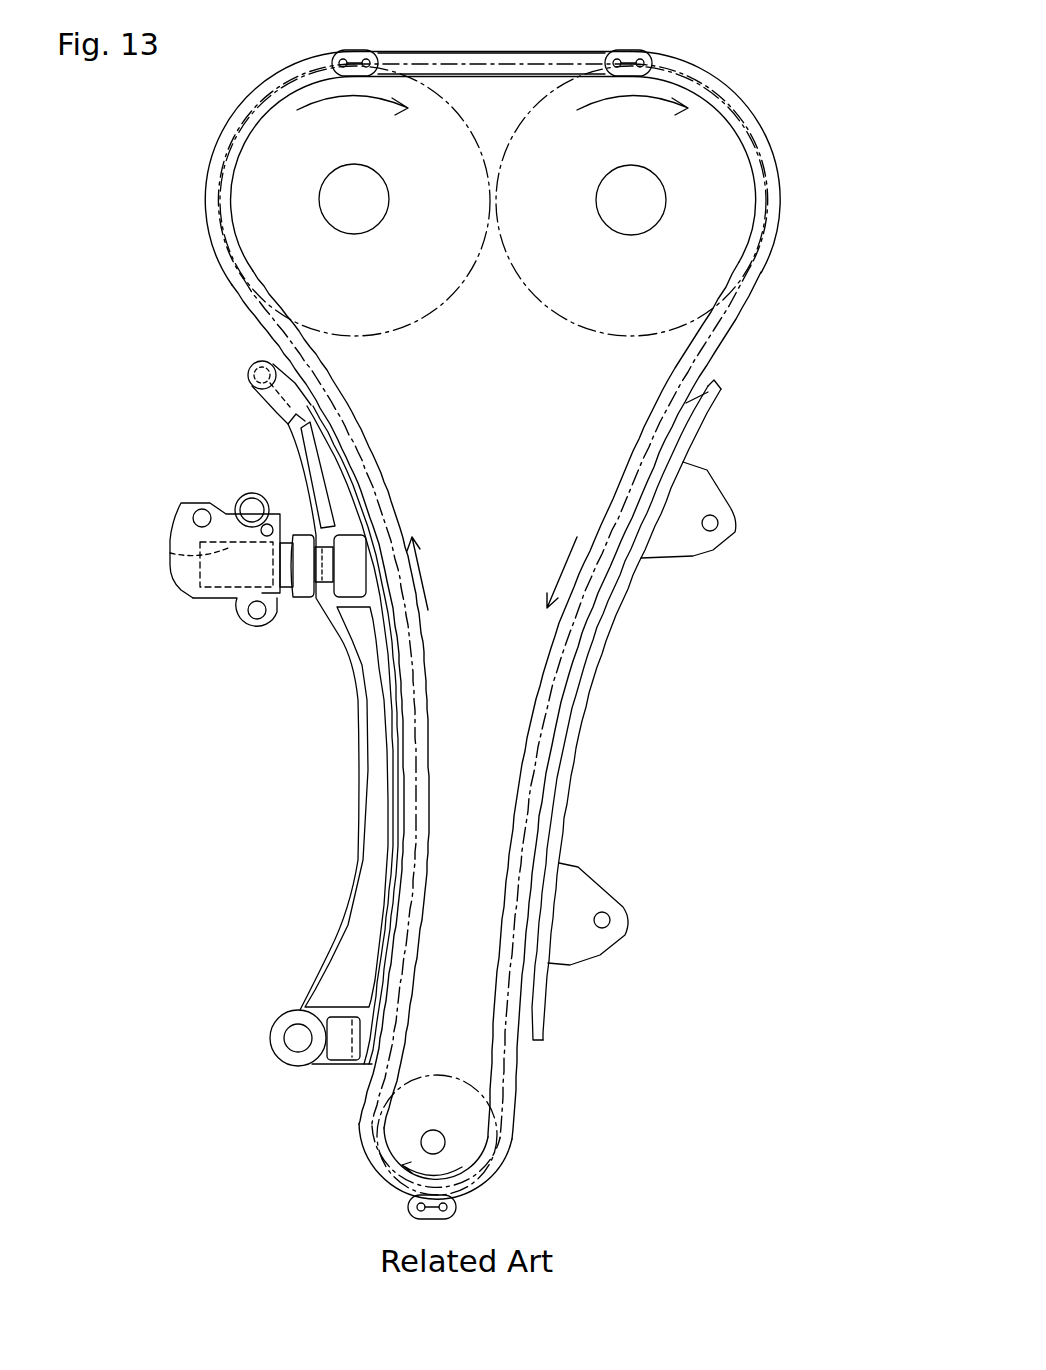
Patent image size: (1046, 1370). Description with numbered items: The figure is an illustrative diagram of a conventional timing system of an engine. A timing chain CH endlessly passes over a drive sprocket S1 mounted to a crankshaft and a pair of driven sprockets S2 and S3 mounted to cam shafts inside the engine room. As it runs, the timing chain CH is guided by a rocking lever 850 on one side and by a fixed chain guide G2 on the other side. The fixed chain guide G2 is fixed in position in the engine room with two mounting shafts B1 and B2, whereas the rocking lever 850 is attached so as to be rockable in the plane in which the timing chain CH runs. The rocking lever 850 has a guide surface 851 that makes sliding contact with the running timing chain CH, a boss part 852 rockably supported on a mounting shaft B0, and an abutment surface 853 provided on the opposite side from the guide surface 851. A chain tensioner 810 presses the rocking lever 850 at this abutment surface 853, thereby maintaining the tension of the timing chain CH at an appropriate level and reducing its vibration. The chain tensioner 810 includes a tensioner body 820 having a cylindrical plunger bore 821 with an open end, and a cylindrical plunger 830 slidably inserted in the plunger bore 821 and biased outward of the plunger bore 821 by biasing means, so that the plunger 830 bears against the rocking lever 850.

The timing chain CH is at (708, 342).
The drive sprocket S1 is at (470, 1148).
The driven sprocket S2 is at (262, 189).
The driven sprocket S3 is at (705, 178).
The fixed chain guide G2 is at (570, 766).
The mounting shaft B0 is at (288, 1040).
The mounting shaft B1 is at (718, 523).
The mounting shaft B2 is at (610, 920).
The chain tensioner 810 is at (183, 505).
The tensioner body 820 is at (250, 598).
The plunger bore 821 is at (200, 548).
The plunger 830 is at (290, 558).
The rocking lever 850 is at (350, 918).
The guide surface 851 is at (427, 773).
The boss part 852 is at (282, 1022).
The abutment surface 853 is at (297, 596).